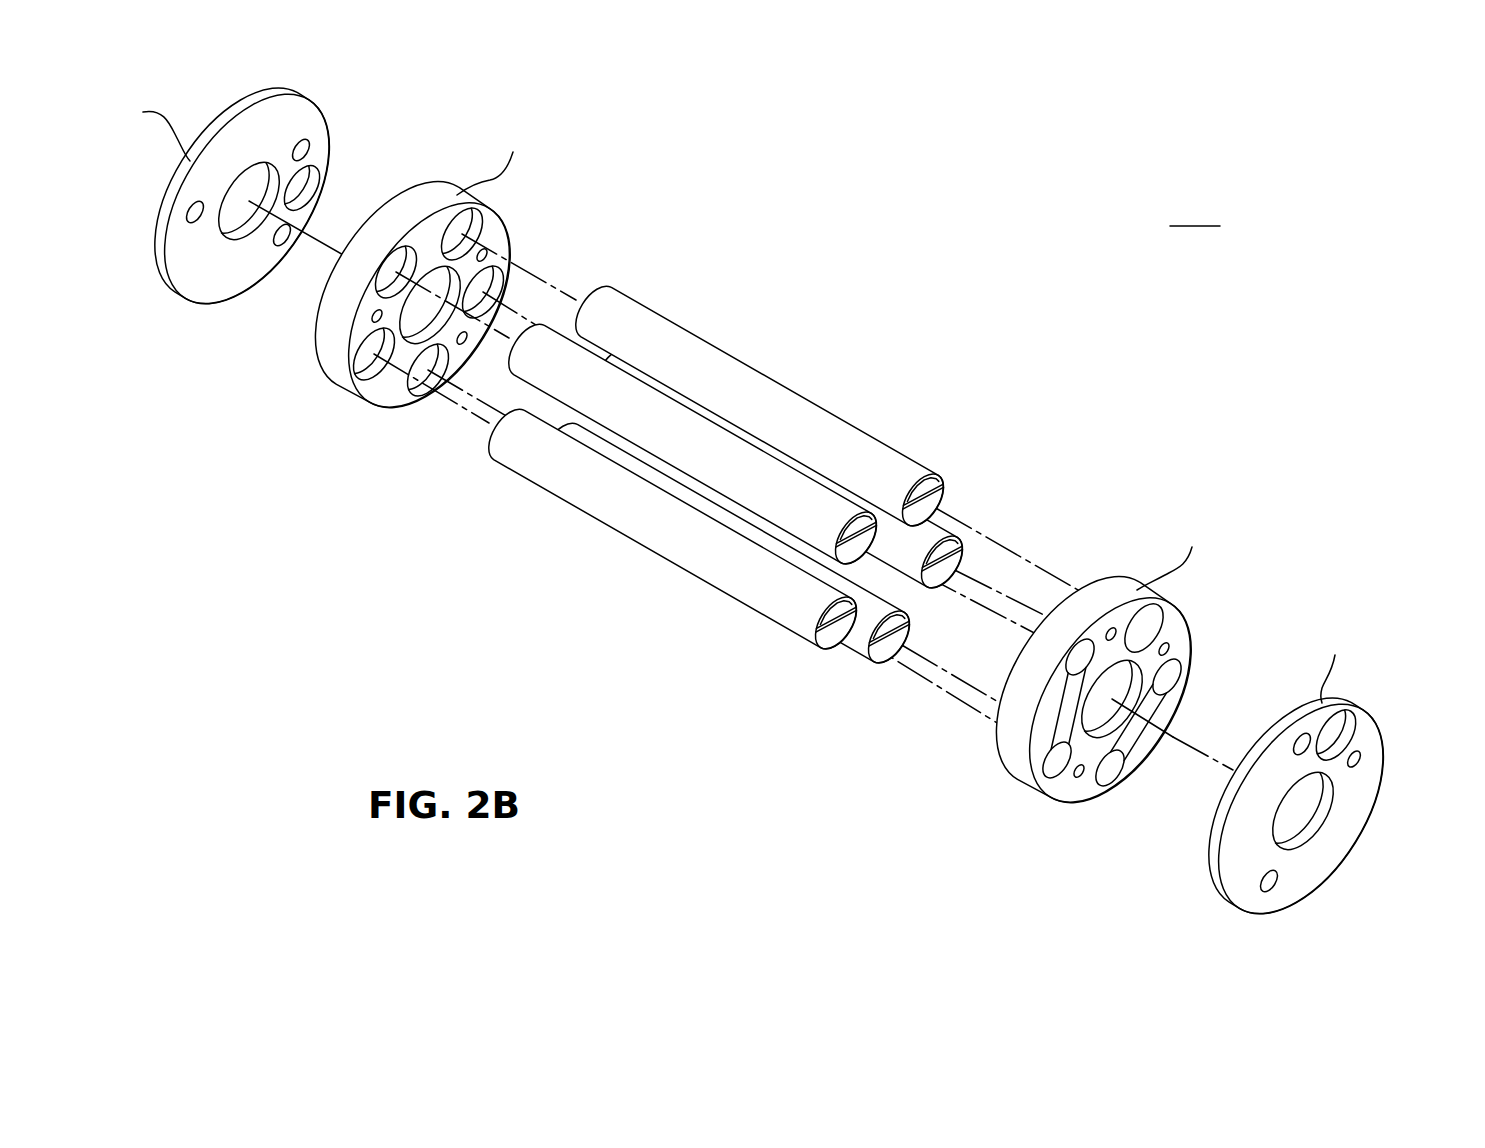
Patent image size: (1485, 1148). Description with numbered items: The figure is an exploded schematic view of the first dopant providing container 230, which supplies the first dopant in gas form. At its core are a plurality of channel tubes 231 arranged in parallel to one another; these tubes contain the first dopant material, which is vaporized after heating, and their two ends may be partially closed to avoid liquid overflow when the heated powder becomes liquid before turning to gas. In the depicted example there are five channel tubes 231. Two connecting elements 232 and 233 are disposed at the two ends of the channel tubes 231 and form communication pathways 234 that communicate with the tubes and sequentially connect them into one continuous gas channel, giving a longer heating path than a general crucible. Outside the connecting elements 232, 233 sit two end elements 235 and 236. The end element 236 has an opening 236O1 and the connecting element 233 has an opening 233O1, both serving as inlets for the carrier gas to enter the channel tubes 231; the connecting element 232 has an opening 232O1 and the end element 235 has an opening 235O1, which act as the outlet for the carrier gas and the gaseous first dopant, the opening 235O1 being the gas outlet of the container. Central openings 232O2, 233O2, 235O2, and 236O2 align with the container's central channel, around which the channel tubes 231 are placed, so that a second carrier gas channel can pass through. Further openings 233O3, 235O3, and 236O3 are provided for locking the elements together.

The first dopant providing container 230 is at (1195, 213).
The channel tubes 231 is at (770, 393).
The connecting element 232 is at (1109, 675).
The opening 232O1 is at (1153, 615).
The opening 232O2 is at (1100, 721).
The connecting element 233 is at (428, 282).
The opening 233O1 is at (495, 283).
The opening 233O2 is at (410, 303).
The opening 233O3 is at (373, 319).
The communication pathways 234 is at (1064, 708).
The end element 235 is at (1301, 787).
The opening 235O1 is at (1340, 727).
The opening 235O2 is at (1302, 815).
The opening 235O3 is at (1358, 756).
The end element 236 is at (231, 199).
The opening 236O1 is at (297, 185).
The opening 236O2 is at (240, 226).
The opening 236O3 is at (191, 228).